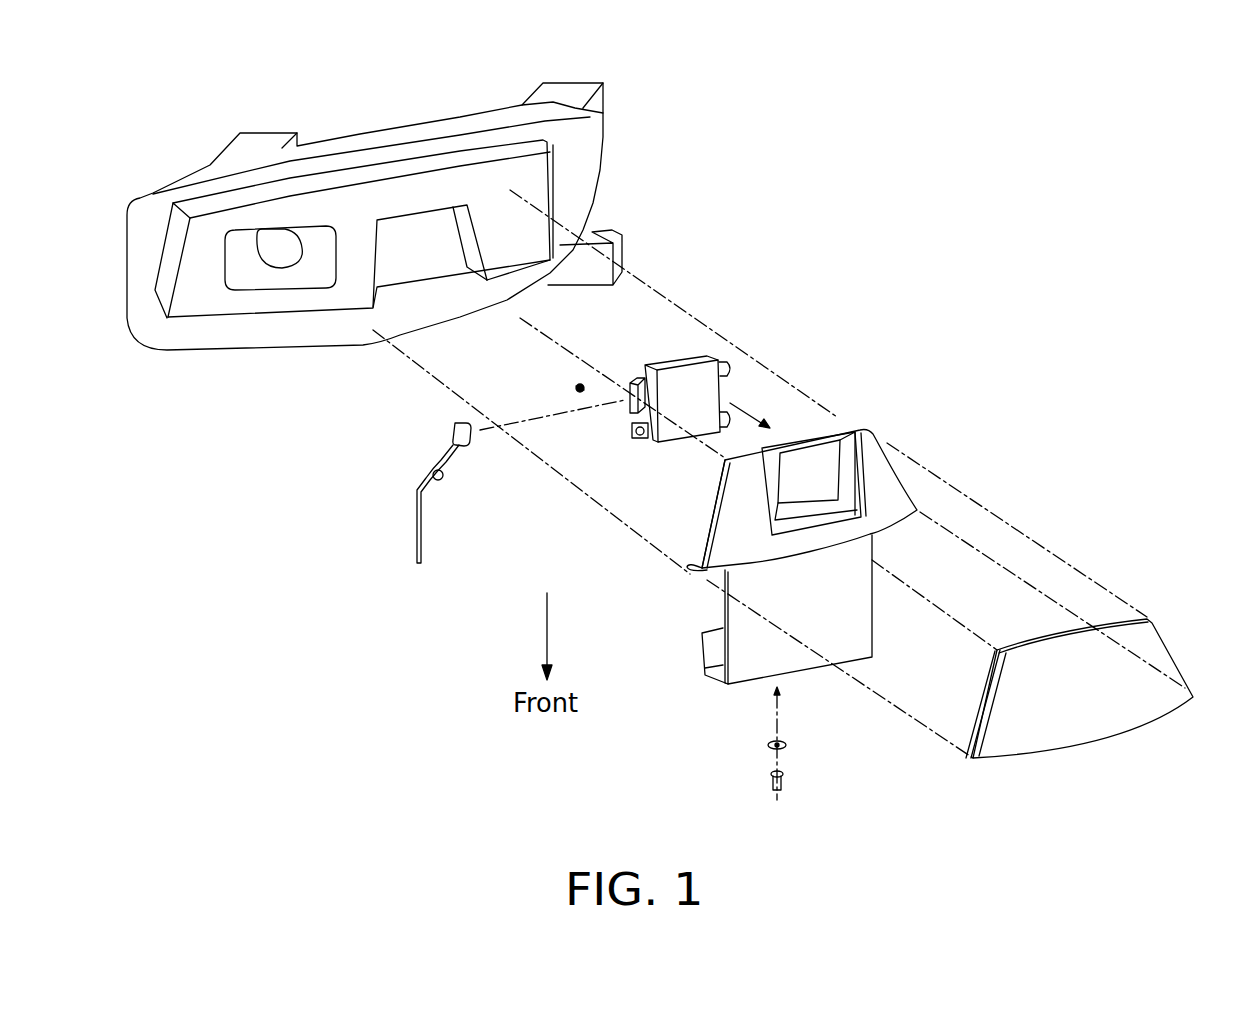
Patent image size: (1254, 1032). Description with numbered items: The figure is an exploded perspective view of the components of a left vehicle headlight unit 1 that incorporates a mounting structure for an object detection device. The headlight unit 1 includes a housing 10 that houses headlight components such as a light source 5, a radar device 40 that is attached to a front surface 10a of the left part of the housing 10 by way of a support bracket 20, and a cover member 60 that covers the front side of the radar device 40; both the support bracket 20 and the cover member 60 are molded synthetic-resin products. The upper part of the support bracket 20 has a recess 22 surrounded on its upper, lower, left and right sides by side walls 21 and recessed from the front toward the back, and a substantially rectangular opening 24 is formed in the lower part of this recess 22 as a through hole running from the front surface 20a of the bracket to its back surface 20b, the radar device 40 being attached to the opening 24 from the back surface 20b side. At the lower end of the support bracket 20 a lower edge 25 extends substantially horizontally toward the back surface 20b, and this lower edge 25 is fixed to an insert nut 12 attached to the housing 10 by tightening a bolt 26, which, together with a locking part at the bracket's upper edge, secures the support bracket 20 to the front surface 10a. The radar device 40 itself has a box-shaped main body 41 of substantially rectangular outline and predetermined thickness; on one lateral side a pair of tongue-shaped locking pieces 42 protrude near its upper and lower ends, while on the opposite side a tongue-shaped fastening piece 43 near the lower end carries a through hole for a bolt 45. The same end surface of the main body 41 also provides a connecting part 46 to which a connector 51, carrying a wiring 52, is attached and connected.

The headlight unit 1 is at (800, 178).
The light source 5 is at (278, 243).
The housing 10 is at (477, 123).
The front surface 10a is at (453, 188).
The insert nut 12 is at (785, 744).
The support bracket 20 is at (870, 424).
The front surface 20a is at (852, 443).
The back surface 20b is at (720, 513).
The side walls 21 is at (848, 481).
The recess 22 is at (797, 460).
The opening 24 is at (833, 420).
The lower edge 25 is at (702, 636).
The bolt 26 is at (786, 796).
The radar device 40 is at (685, 353).
The main body 41 is at (660, 363).
The locking pieces 42 is at (730, 363).
The fastening piece 43 is at (641, 439).
The bolt 45 is at (575, 388).
The connecting part 46 is at (636, 380).
The connector 51 is at (453, 434).
The wiring 52 is at (423, 483).
The cover member 60 is at (1150, 614).